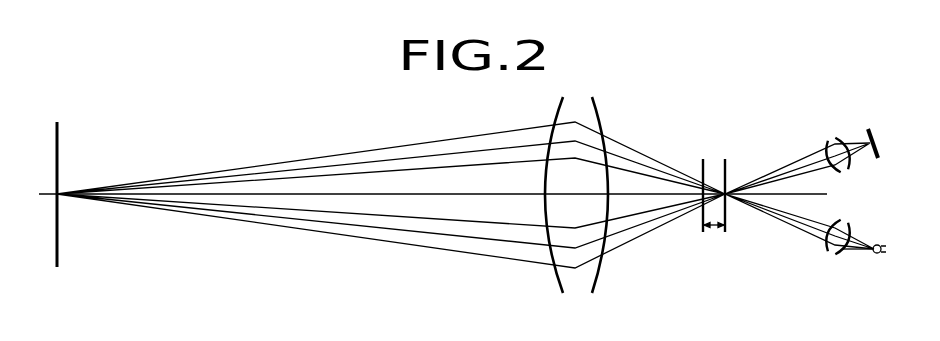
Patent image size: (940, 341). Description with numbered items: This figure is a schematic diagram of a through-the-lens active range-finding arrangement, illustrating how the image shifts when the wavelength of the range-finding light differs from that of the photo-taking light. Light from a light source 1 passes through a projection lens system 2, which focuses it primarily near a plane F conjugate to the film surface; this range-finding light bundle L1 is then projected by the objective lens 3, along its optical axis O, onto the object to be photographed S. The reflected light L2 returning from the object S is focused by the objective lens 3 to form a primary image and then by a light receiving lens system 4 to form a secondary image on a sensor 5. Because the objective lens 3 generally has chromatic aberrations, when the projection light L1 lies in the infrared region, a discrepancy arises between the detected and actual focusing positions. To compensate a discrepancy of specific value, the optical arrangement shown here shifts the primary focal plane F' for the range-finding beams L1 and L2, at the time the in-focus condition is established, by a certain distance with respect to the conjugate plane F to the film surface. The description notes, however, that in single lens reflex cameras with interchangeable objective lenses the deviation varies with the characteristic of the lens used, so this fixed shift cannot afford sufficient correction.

The optical axis O is at (343, 196).
The object to be photographed S is at (60, 243).
The light bundle L1 is at (633, 154).
The reflected light L2 is at (637, 233).
The objective lens 3 is at (587, 273).
The plane conjugate to the film surface F is at (692, 181).
The primary focal plane for the range-finding light beams F' is at (739, 181).
The light receiving lens system 4 is at (832, 139).
The sensor 5 is at (878, 150).
The projection lens system 2 is at (833, 254).
The light source 1 is at (880, 257).